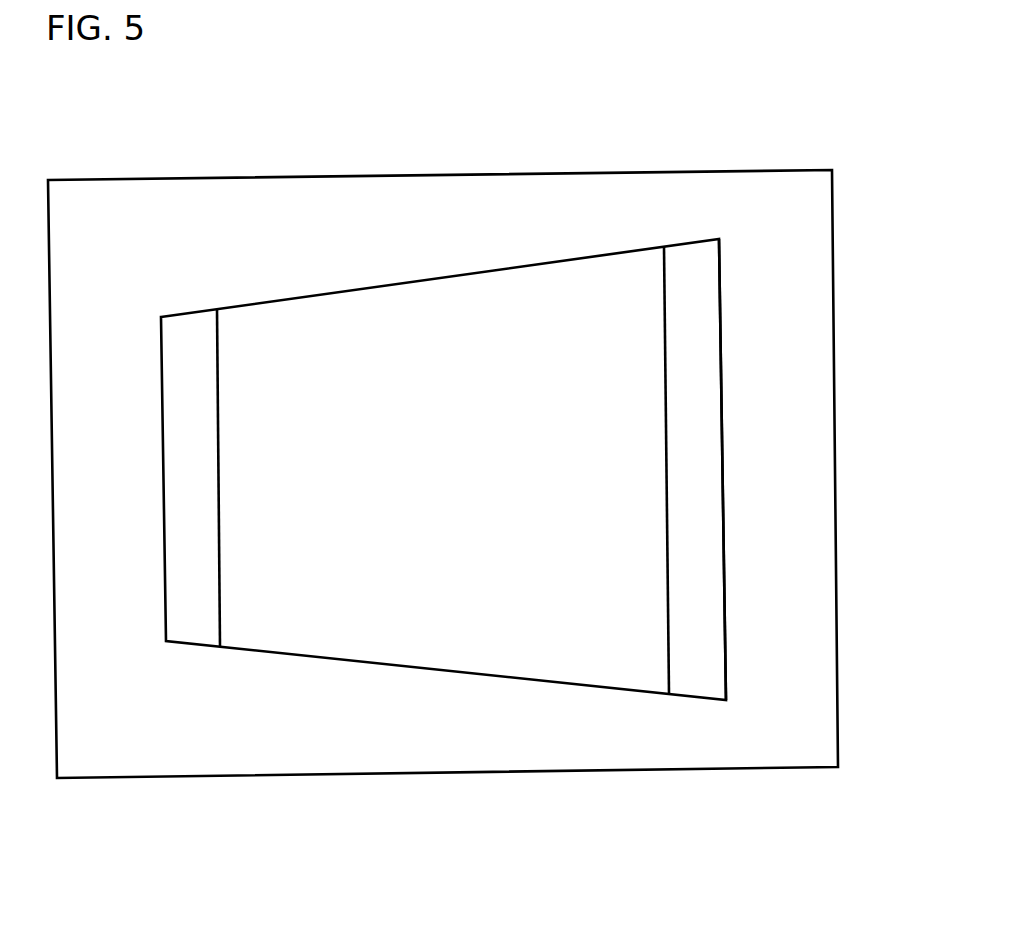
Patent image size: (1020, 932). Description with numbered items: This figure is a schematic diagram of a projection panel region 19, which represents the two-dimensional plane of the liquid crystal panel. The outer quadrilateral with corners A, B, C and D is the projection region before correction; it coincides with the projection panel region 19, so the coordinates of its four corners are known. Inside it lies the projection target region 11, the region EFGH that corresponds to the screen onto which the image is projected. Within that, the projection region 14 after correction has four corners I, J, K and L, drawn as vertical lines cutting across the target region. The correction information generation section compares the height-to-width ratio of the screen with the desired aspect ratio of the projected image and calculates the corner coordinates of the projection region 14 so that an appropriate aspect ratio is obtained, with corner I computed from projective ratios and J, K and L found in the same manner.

The projection panel region 19 is at (780, 169).
The projection region after correction 14 is at (533, 262).
The projection target region 11 is at (723, 416).